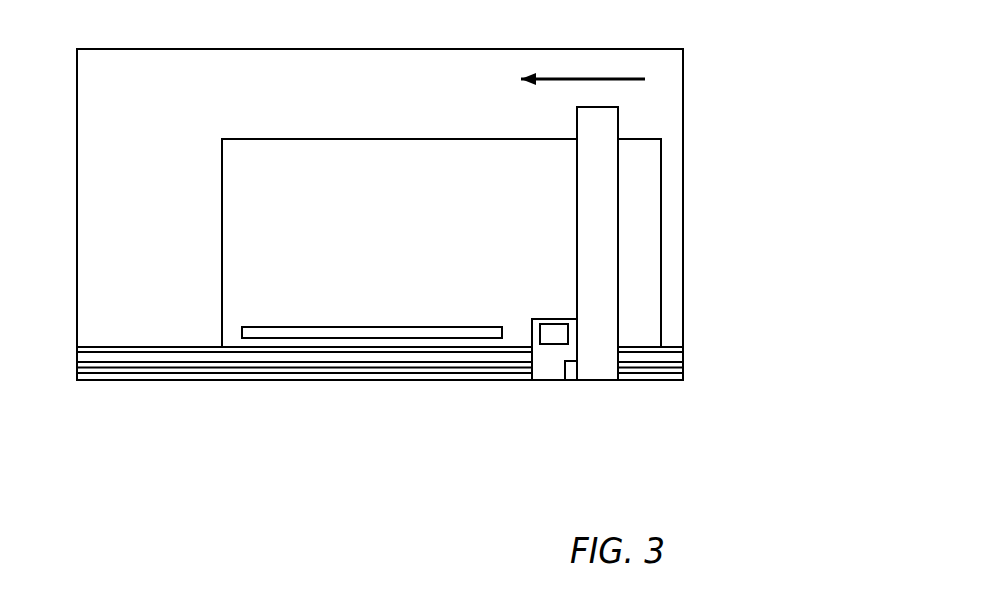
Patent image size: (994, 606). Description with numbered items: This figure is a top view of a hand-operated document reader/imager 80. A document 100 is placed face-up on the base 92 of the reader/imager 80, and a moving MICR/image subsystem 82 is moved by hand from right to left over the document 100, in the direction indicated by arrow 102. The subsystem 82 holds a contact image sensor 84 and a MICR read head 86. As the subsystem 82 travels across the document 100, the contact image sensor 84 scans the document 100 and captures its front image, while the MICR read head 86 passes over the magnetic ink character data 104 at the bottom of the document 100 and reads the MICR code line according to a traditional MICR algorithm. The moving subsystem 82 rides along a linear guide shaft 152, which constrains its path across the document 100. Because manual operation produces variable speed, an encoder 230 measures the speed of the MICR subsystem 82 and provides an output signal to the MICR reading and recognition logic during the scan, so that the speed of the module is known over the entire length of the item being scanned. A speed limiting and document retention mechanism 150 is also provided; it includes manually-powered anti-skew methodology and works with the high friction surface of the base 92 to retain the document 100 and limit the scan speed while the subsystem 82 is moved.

The document reader/imager 80 is at (246, 29).
The moving MICR/image subsystem 82 is at (563, 125).
The contact image sensor 84 is at (620, 219).
The MICR read head 86 is at (550, 344).
The base 92 is at (660, 48).
The document 100 is at (222, 163).
The arrow 102 is at (567, 75).
The magnetic ink character data 104 is at (387, 323).
The speed limiting and document retention mechanism 150 is at (317, 382).
The linear guide shaft 152 is at (255, 371).
The encoder 230 is at (570, 380).